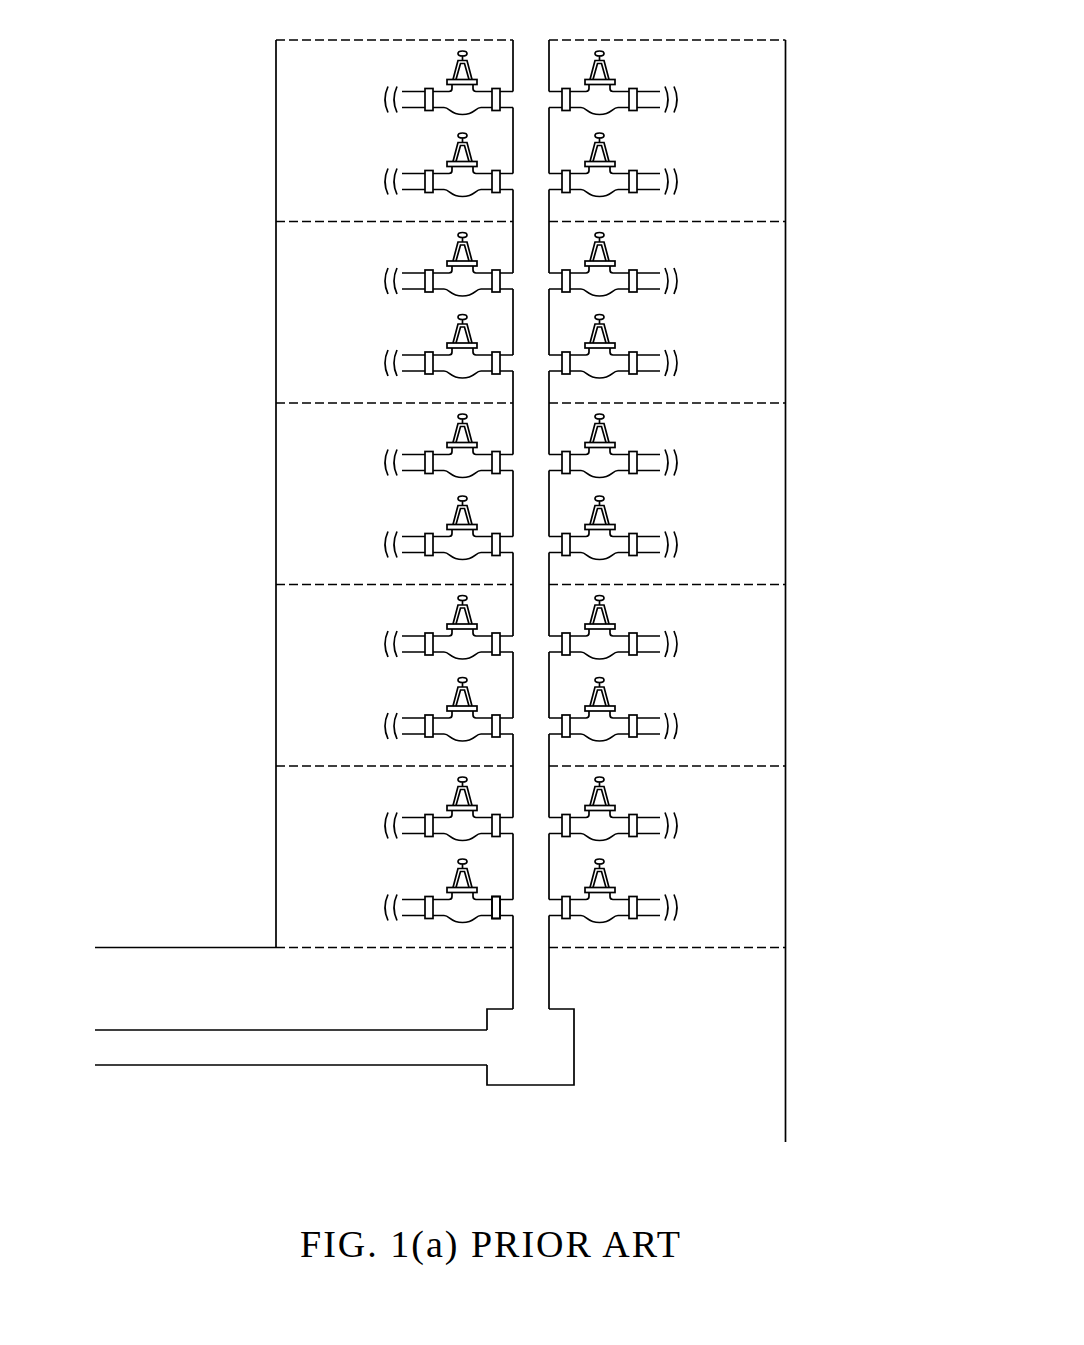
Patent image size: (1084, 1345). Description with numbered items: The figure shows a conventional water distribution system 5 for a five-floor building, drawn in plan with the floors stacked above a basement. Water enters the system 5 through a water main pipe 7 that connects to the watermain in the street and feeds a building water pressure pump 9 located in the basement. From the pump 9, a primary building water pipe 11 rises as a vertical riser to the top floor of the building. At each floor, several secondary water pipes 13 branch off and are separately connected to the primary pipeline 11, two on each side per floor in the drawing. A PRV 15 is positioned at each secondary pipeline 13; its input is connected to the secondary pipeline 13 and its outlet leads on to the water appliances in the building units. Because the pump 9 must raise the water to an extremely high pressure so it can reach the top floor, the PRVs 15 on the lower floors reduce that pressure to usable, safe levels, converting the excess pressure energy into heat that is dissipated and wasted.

The water distribution system 5 is at (198, 60).
The water main pipe 7 is at (403, 1038).
The building water pressure pump 9 is at (525, 1058).
The primary building water pipe 11 is at (550, 973).
The secondary water pipe 13 is at (495, 918).
The PRV 15 is at (333, 460).